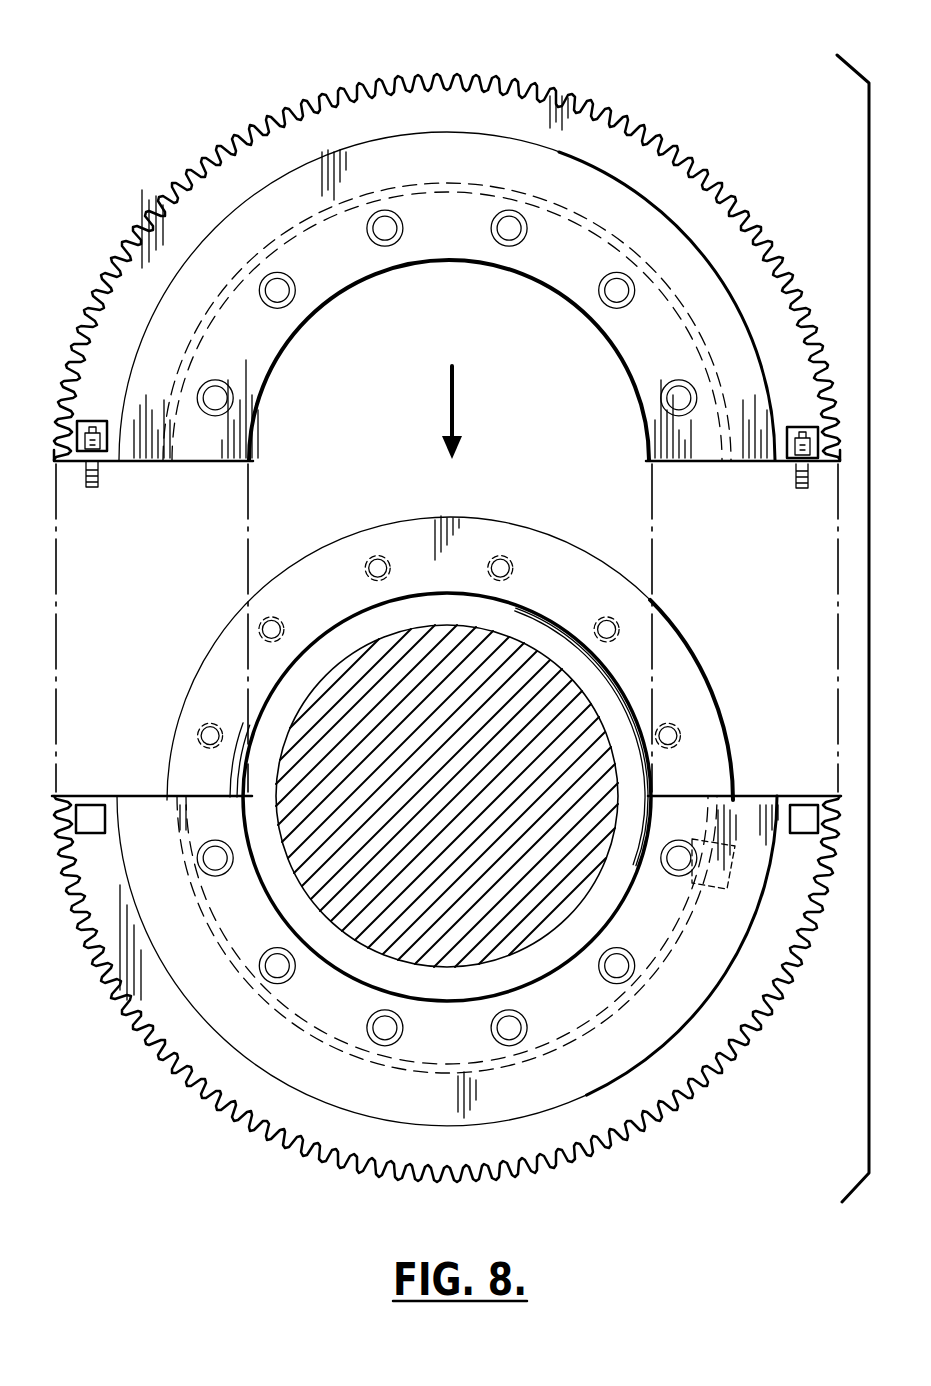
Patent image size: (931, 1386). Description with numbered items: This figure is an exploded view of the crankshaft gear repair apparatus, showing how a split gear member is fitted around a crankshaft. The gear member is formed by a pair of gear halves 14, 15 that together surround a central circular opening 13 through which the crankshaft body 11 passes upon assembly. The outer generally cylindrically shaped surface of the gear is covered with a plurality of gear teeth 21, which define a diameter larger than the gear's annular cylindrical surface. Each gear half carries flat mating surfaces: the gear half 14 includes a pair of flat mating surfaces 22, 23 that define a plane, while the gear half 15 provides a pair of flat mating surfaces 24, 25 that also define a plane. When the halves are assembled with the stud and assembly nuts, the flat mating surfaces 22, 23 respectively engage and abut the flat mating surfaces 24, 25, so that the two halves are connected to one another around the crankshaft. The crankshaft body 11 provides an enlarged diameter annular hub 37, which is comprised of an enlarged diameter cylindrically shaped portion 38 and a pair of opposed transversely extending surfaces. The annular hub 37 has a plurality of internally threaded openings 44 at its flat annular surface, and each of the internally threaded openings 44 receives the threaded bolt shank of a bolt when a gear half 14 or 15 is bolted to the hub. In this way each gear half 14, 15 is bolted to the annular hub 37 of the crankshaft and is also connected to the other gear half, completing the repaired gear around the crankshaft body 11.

The crankshaft body 11 is at (585, 745).
The central circular opening 13 is at (382, 342).
The gear half 14 is at (243, 158).
The gear half 15 is at (130, 955).
The gear teeth 21 is at (352, 87).
The flat mating surface 22 is at (198, 476).
The flat mating surface 23 is at (749, 476).
The flat mating surface 24 is at (128, 780).
The flat mating surface 25 is at (793, 780).
The annular hub 37 is at (560, 568).
The enlarged diameter cylindrically shaped portion 38 is at (704, 652).
The internally threaded openings 44 is at (206, 720).